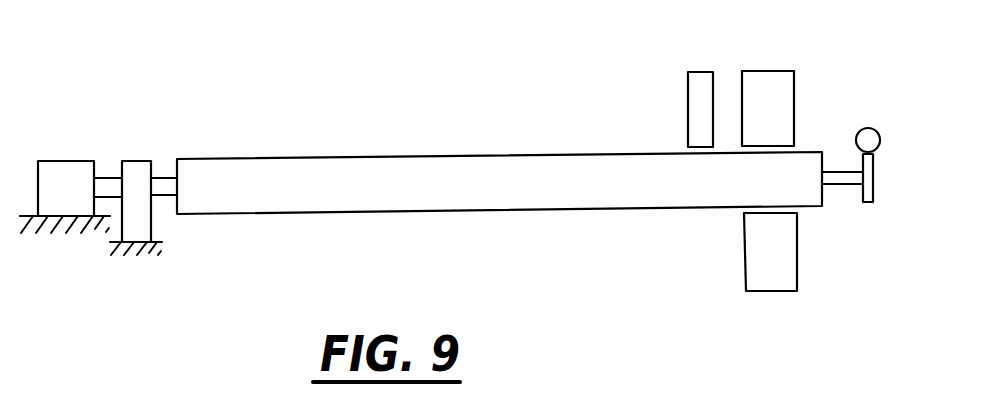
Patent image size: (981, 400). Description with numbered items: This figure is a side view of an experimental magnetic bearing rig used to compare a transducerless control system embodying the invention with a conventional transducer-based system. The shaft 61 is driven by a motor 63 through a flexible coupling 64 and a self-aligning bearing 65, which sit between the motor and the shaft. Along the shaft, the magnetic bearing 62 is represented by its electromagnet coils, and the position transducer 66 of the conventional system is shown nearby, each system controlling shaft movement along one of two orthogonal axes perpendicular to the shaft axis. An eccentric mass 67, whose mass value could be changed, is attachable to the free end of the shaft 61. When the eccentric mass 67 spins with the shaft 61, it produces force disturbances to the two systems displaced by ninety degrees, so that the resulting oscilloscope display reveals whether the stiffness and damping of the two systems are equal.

The shaft 61 is at (338, 178).
The magnetic bearing 62 is at (757, 275).
The motor 63 is at (66, 170).
The flexible coupling 64 is at (107, 183).
The self-aligning bearing 65 is at (133, 168).
The position transducer 66 is at (697, 82).
The eccentric mass 67 is at (865, 130).